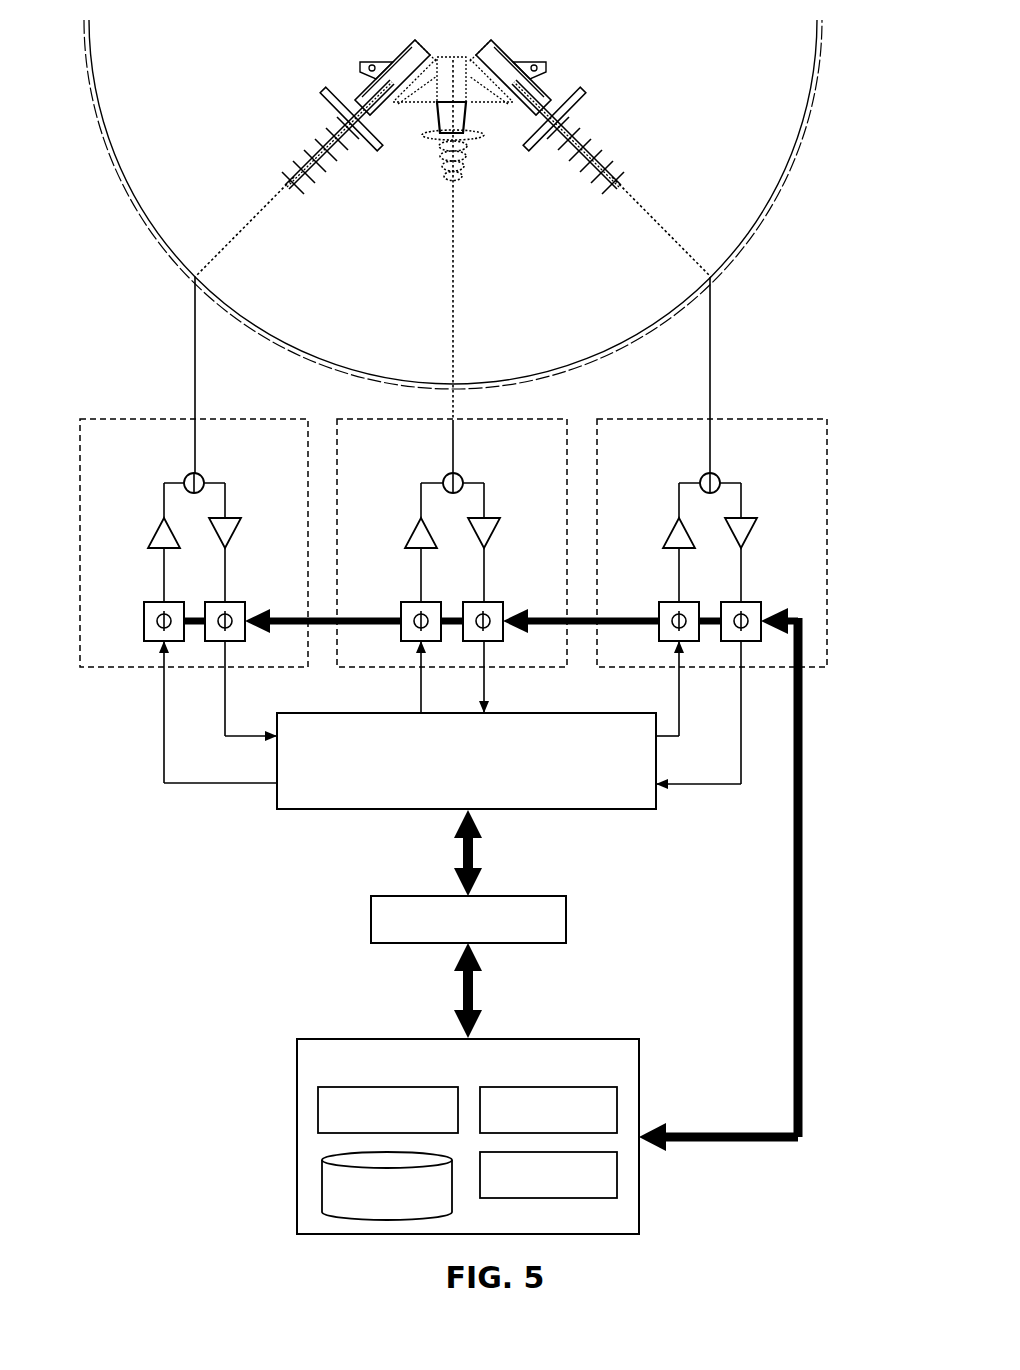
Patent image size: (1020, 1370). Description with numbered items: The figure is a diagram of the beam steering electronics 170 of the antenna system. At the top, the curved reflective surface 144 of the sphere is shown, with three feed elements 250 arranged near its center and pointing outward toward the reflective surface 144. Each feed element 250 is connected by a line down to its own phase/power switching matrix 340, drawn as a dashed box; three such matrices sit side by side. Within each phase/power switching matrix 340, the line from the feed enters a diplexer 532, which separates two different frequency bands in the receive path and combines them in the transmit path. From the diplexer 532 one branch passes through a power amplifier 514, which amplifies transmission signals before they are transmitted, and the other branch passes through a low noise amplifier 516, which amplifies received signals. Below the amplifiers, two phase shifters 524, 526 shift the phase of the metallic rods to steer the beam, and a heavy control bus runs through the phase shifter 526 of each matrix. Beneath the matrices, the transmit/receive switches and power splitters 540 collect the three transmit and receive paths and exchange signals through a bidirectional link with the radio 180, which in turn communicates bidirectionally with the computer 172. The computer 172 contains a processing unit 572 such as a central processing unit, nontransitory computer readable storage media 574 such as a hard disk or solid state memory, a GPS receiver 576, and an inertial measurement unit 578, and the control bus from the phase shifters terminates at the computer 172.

The reflective surface 144 is at (453, 204).
The beam steering electronics 170 is at (862, 372).
The computer 172 is at (437, 1136).
The radio 180 is at (446, 919).
The antenna feed element 250 is at (453, 230).
The phase/power switching matrix 340 is at (460, 543).
The power amplifier 514 is at (398, 542).
The low noise amplifier 516 is at (513, 542).
The phase shifter 524 is at (398, 627).
The phase shifter 526 is at (511, 612).
The diplexer 532 is at (462, 451).
The transmit/receive switches and power splitters 540 is at (496, 761).
The processing unit 572 is at (388, 1110).
The nontransitory computer readable storage media 574 is at (387, 1186).
The global positioning satellite (GPS) receiver 576 is at (548, 1110).
The inertial measurement unit (IMU) 578 is at (548, 1175).